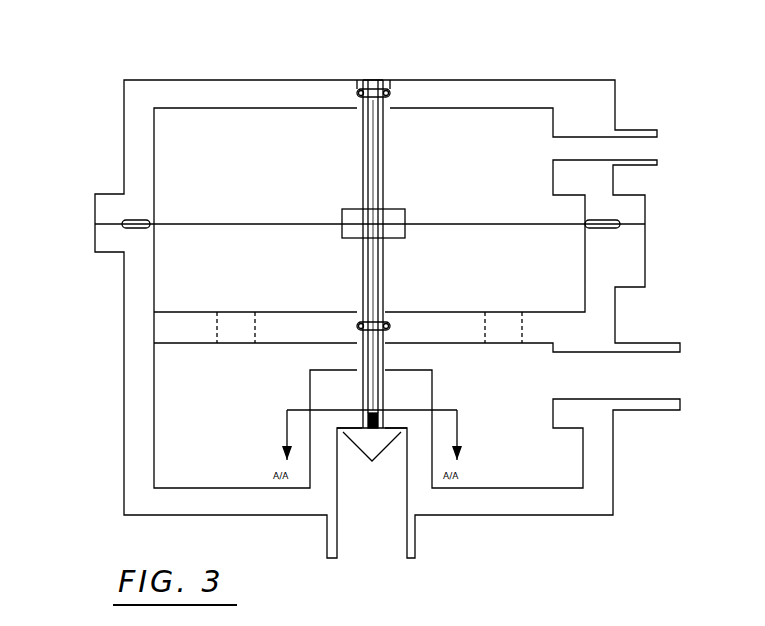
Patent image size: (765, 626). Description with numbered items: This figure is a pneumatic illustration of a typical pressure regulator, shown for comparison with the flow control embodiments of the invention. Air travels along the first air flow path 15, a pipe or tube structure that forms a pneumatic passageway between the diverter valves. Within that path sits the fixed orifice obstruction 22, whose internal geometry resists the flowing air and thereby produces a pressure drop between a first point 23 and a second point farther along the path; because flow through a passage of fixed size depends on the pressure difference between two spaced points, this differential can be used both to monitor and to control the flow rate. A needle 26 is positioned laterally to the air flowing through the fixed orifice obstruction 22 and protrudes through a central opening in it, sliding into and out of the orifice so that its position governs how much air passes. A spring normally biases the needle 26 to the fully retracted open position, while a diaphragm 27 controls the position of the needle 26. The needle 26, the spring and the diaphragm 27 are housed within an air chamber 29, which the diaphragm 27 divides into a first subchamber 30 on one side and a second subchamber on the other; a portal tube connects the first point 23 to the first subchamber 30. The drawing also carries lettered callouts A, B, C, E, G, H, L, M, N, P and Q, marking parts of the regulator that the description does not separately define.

The first air flow path 15 is at (380, 498).
The fixed orifice obstruction 22 is at (198, 403).
The first point 23 is at (648, 133).
The needle 26 is at (359, 115).
The diaphragm 27 is at (236, 214).
The air chamber 29 is at (137, 210).
The first subchamber 30 is at (198, 138).
The outer tube A is at (384, 133).
The inner tube B is at (380, 185).
The bushing C is at (404, 208).
The upper wall E is at (616, 113).
The nut G is at (397, 91).
The cap H is at (377, 78).
The guide pin L is at (178, 277).
The piston plate M is at (242, 325).
The lower nut N is at (355, 323).
The lower chamber P is at (528, 456).
The lower flange Q is at (640, 400).